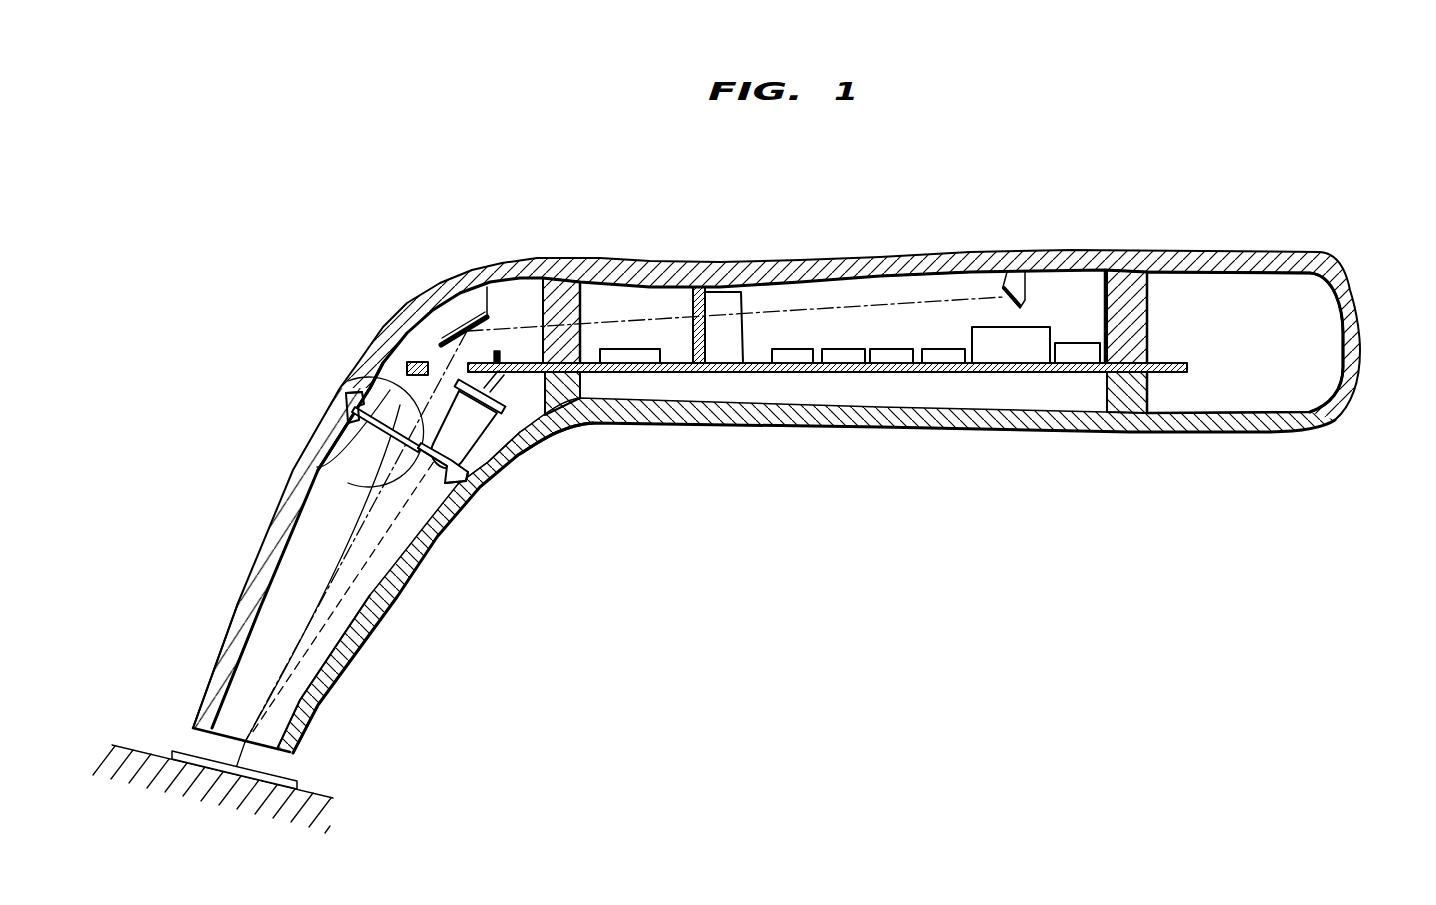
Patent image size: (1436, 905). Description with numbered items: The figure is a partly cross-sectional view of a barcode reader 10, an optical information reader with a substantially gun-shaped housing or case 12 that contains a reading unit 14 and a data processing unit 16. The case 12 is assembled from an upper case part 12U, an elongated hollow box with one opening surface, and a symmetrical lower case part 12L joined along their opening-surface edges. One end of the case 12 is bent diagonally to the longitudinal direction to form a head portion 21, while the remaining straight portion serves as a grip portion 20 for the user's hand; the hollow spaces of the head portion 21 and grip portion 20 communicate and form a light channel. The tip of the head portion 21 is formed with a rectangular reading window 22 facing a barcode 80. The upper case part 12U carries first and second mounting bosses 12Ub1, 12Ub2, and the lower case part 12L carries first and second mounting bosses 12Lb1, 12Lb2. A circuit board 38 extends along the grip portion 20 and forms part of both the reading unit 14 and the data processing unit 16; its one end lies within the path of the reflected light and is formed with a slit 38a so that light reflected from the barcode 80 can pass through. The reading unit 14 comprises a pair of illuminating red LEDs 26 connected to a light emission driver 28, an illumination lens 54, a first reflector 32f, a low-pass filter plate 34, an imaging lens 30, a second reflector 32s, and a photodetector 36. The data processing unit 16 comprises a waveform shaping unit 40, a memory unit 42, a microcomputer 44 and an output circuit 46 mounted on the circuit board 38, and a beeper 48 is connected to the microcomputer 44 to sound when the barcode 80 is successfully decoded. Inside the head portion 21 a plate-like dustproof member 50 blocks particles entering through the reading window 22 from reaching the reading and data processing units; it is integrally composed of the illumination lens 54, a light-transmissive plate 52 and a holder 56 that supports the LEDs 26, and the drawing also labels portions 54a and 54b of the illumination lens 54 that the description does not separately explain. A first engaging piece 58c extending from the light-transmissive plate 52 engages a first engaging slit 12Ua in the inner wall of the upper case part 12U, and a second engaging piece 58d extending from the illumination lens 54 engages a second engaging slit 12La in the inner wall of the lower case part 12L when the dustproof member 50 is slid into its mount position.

The barcode reader 10 is at (1224, 228).
The housing (case) 12 is at (1323, 254).
The upper case part 12U is at (1338, 280).
The lower case part 12L is at (1350, 410).
The first engaging slit 12Ua is at (360, 382).
The first mounting boss 12Ub1 is at (1140, 292).
The second mounting boss 12Ub2 is at (543, 303).
The second engaging slit 12La is at (513, 474).
The first mounting boss 12Lb1 is at (1148, 388).
The second mounting boss 12Lb2 is at (583, 385).
The reading unit 14 is at (525, 478).
The data processing unit 16 is at (851, 384).
The grip portion 20 is at (1082, 262).
The head portion 21 is at (343, 670).
The reading window 22 is at (223, 731).
The illuminating red LEDs 26 is at (540, 428).
The light emission driver 28 is at (630, 348).
The imaging lens 30 is at (724, 292).
The first reflector 32f is at (440, 343).
The second reflector 32s is at (1006, 284).
The low-pass filter plate 34 is at (697, 289).
The photodetector 36 is at (1006, 358).
The circuit board 38 is at (720, 374).
The slit 38a is at (433, 398).
The waveform shaping unit 40 is at (790, 348).
The memory unit 42 is at (886, 348).
The microcomputer 44 is at (836, 348).
The output circuit 46 is at (1072, 358).
The beeper 48 is at (940, 348).
The dustproof member 50 is at (390, 432).
The light-transmissive plate 52 is at (350, 420).
The illumination lens 54 is at (468, 474).
The holder first portion 54a is at (418, 472).
The holder second portion 54b is at (360, 394).
The holder 56 is at (497, 466).
The first engaging piece 58c is at (352, 402).
The second engaging piece 58d is at (482, 492).
The barcode 80 is at (287, 785).